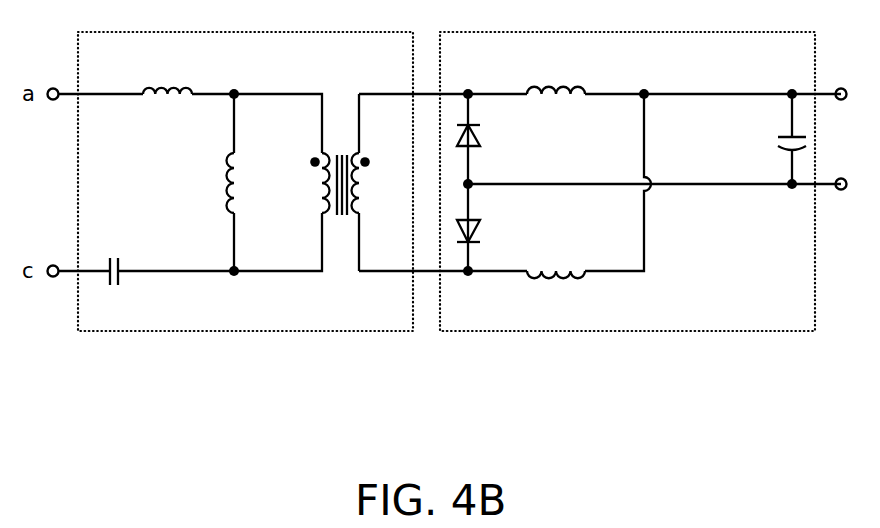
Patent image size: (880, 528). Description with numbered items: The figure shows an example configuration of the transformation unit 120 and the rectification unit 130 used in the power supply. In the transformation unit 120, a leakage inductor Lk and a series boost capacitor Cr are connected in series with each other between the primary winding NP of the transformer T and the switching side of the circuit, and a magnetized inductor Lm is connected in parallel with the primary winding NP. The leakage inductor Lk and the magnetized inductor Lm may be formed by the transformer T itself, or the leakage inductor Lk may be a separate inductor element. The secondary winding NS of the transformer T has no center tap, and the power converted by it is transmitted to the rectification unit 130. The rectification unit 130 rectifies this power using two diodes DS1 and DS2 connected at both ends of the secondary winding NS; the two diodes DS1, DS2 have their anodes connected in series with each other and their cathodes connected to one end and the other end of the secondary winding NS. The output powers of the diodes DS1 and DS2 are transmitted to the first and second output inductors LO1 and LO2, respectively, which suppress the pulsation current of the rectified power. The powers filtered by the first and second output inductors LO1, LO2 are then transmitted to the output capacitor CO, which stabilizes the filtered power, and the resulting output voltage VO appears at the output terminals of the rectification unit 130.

The transformation unit 120 is at (236, 219).
The rectification unit 130 is at (597, 219).
The leakage inductor Lk is at (167, 77).
The magnetized inductor Lm is at (251, 183).
The series boost capacitor Cr is at (108, 257).
The transformer T is at (341, 139).
The primary winding NP is at (308, 172).
The secondary winding NS is at (374, 172).
The first output inductor LO1 is at (556, 77).
The second output inductor LO2 is at (556, 295).
The first diode DS1 is at (490, 141).
The second diode DS2 is at (490, 235).
The output capacitor CO is at (771, 139).
The output voltage VO is at (856, 139).